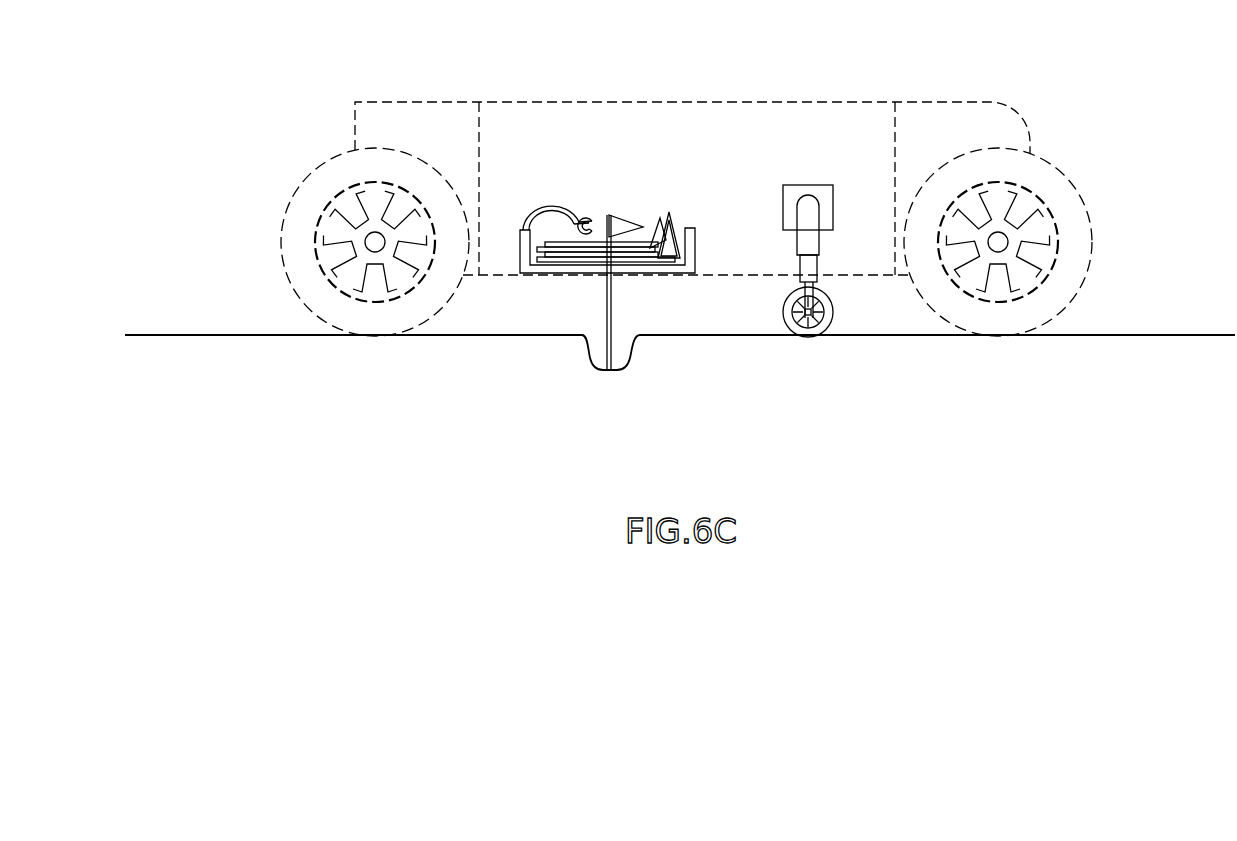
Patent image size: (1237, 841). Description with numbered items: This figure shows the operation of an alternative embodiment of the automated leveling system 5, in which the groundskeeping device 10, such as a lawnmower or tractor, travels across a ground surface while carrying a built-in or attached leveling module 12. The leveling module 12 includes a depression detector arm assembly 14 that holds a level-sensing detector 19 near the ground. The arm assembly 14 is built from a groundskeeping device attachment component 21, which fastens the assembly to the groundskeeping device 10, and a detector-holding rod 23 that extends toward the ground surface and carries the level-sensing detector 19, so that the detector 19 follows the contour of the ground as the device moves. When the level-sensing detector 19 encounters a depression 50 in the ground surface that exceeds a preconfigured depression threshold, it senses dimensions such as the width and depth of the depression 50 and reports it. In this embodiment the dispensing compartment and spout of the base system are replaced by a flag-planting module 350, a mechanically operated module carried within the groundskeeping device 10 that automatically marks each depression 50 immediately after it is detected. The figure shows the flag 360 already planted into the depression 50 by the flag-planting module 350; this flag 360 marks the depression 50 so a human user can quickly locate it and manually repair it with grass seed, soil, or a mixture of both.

The automated leveling system 5 is at (246, 137).
The groundskeeping device 10 is at (518, 58).
The leveling module 12 is at (791, 192).
The depression detector arm assembly 14 is at (780, 241).
The level-sensing detector 19 is at (800, 337).
The groundskeeping device attachment component 21 is at (833, 171).
The detector-holding rod 23 is at (820, 235).
The depression 50 is at (623, 378).
The flag-planting module 350 is at (551, 207).
The flag 360 is at (657, 230).